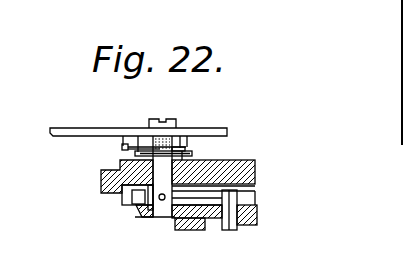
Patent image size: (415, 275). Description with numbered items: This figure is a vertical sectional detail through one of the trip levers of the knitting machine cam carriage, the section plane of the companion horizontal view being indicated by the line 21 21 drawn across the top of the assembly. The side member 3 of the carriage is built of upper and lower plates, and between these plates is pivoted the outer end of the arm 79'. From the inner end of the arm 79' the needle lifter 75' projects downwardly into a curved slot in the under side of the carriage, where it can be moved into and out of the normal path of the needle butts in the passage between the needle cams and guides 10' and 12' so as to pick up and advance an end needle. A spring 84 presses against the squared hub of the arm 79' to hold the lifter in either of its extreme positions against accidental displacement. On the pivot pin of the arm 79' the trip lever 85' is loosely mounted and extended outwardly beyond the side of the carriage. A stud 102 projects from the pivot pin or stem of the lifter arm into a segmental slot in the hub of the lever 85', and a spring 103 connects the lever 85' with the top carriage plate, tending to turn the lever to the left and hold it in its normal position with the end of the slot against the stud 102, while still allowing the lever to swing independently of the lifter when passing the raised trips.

The section line 21 21 is at (135, 125).
The trip lever 85' is at (127, 140).
The spring 103 is at (122, 147).
The stud 102 is at (182, 155).
The side member of the carriage 3 is at (246, 162).
The arm 79' is at (227, 191).
The spring 84 is at (132, 196).
The needle lifter 75' is at (240, 222).
The needle cam 10' is at (261, 215).
The needle cam 12' is at (174, 225).